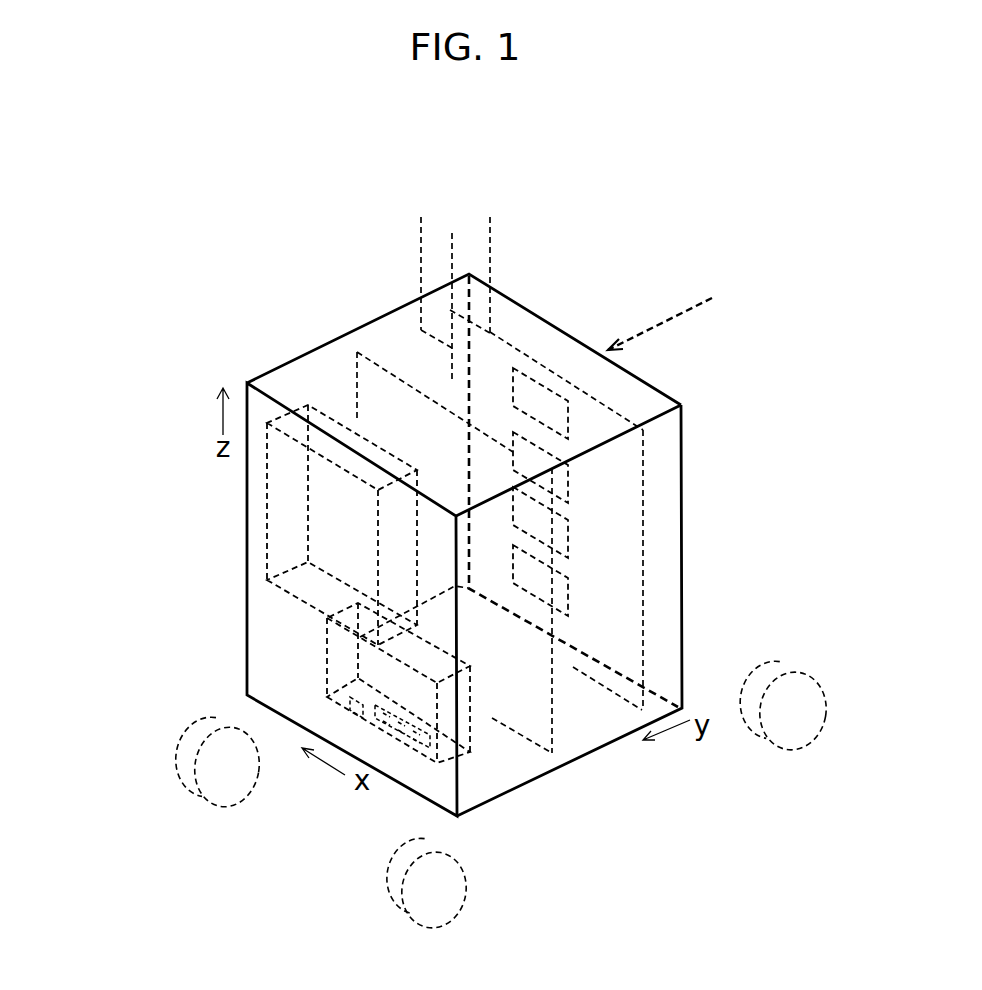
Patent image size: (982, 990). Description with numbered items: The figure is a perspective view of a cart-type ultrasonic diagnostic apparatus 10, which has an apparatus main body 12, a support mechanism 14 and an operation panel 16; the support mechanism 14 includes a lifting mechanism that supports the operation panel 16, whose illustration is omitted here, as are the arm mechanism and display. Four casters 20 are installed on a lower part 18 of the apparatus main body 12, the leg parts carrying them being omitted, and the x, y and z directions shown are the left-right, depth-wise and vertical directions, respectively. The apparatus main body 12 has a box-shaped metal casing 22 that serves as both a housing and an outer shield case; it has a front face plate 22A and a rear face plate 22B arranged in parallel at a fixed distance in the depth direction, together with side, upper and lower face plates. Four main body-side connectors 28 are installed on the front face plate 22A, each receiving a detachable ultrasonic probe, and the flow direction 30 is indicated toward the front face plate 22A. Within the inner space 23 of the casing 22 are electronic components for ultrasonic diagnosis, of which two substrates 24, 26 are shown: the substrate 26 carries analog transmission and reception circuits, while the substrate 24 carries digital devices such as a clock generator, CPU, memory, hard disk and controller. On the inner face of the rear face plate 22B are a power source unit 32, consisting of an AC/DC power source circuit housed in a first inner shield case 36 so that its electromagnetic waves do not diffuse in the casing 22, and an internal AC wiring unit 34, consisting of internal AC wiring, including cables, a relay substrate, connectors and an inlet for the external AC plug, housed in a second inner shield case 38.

The ultrasonic diagnostic apparatus 10 is at (655, 225).
The apparatus main body 12 is at (694, 510).
The support mechanism 14 is at (405, 230).
The operation panel 16 is at (478, 189).
The lower part 18 is at (735, 658).
The caster 20 is at (826, 696).
The casing 22 is at (330, 337).
The front face plate 22A is at (683, 470).
The rear face plate 22B is at (255, 572).
The inner space 23 is at (406, 355).
The substrate 24 is at (560, 712).
The substrate 26 is at (645, 602).
The main body-side connector 28 is at (530, 380).
The air flow direction 30 is at (665, 325).
The power source unit 32 is at (290, 538).
The internal AC wiring unit 34 is at (338, 666).
The shield case 36 is at (328, 405).
The shield case 38 is at (437, 750).